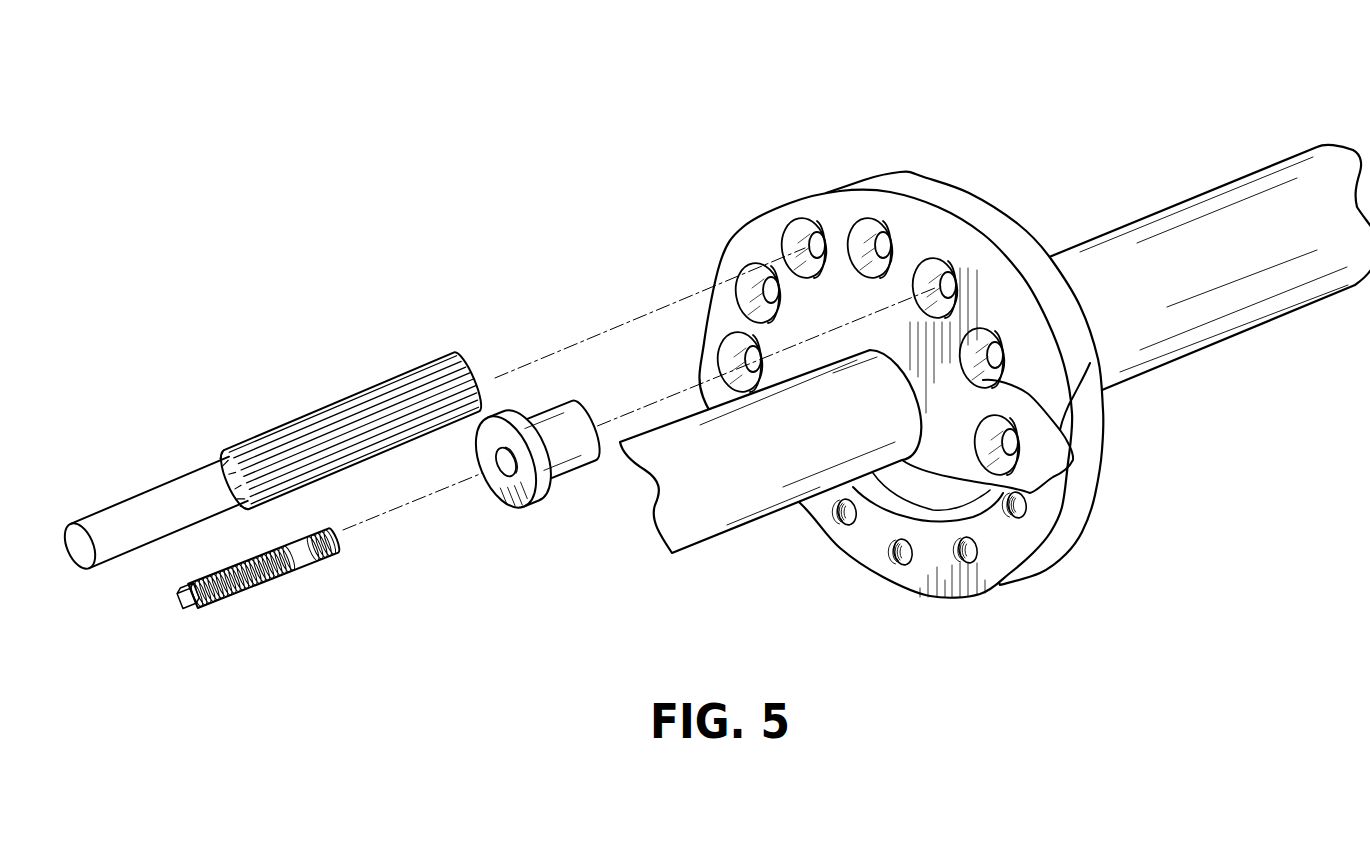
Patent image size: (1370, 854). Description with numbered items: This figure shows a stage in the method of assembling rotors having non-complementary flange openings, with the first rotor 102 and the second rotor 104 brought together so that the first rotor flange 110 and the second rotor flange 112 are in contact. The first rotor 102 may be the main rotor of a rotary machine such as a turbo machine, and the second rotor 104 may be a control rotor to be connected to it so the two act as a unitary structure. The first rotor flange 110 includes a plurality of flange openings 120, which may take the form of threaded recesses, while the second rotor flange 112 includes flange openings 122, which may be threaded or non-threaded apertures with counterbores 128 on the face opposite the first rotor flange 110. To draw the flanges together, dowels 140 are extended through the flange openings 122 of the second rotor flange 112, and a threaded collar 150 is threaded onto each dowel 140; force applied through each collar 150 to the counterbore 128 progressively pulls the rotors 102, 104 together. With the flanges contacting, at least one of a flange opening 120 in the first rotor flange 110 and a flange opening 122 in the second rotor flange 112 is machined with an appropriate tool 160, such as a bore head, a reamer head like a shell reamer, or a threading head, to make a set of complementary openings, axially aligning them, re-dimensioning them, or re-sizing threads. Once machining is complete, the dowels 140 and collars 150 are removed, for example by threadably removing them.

The first rotor 102 is at (1263, 340).
The second rotor 104 is at (716, 550).
The first rotor flange 110 is at (920, 178).
The second rotor flange 112 is at (852, 190).
The flange openings 120 is at (1024, 515).
The flange openings 122 is at (1004, 357).
The counterbores 128 is at (1067, 458).
The dowels 140 is at (288, 572).
The threaded collar 150 is at (565, 473).
The tool 160 is at (130, 520).